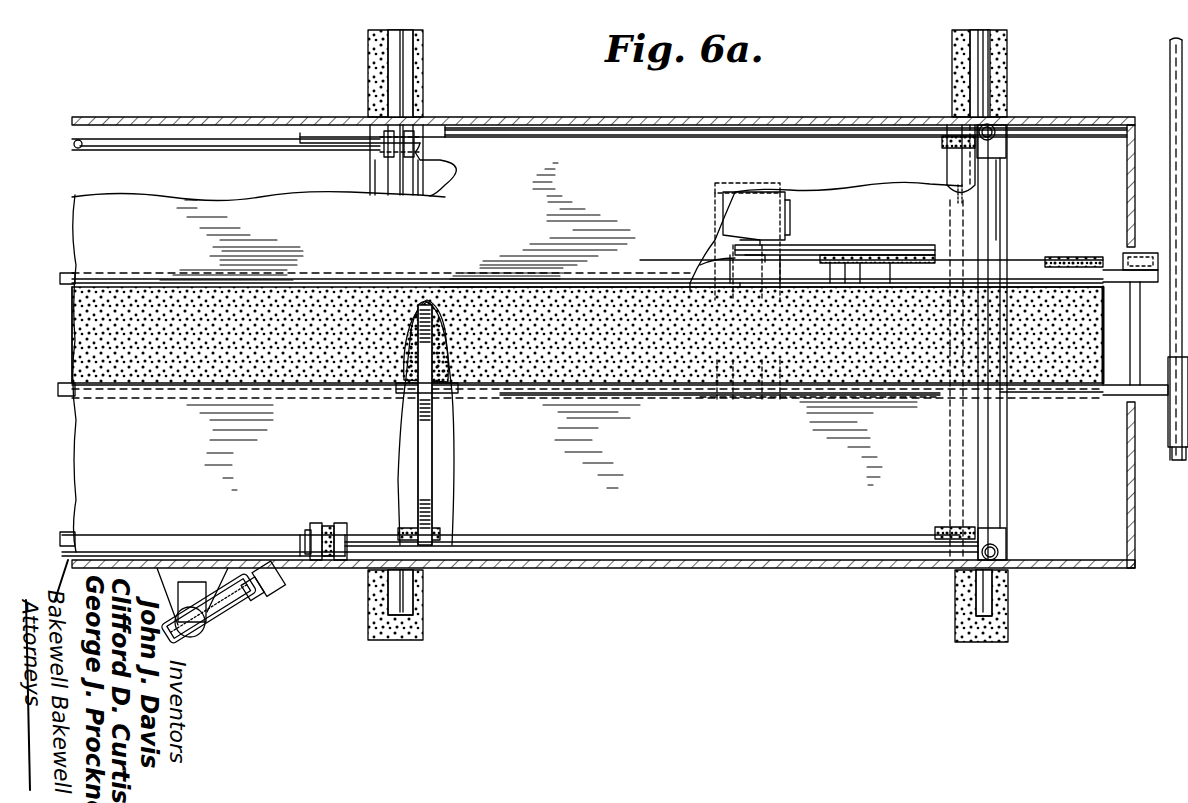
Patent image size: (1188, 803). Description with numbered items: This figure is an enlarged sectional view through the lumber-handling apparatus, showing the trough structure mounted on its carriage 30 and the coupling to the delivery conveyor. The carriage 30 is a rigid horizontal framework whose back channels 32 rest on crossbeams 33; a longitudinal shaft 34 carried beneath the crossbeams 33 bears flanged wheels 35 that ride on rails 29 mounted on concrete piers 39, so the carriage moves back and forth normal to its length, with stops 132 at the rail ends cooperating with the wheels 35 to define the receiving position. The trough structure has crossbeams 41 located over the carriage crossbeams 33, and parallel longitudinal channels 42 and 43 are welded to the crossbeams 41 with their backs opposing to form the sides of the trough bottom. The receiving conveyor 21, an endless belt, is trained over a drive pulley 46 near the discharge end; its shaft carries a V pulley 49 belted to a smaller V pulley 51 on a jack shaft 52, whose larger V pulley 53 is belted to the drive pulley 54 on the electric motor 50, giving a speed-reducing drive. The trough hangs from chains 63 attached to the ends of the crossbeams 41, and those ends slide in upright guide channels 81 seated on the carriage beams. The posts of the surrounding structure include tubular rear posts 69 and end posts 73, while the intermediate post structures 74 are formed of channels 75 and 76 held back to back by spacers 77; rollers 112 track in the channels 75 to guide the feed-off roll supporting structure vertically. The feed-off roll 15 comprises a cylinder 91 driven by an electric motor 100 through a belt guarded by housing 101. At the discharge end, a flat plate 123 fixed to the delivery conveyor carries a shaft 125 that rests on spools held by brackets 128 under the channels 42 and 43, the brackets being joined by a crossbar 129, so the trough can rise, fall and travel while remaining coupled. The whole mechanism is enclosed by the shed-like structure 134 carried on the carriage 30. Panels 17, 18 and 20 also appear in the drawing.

The feed-off roll 15 is at (235, 628).
The upper wall sheet 17 is at (508, 214).
The lower wall sheet 18 is at (526, 482).
The insulation panel 20 is at (358, 300).
The feed or receiving conveyor 21 is at (793, 380).
The rails 29 is at (401, 91).
The carriage 30 is at (544, 106).
The back channels 32 is at (838, 122).
The crossbeams 33 is at (388, 178).
The shaft 34 is at (226, 150).
The flanged wheels 35 is at (390, 136).
The concrete piers 39 is at (412, 68).
The crossbeams 41 is at (433, 444).
The longitudinal channel 42 is at (1038, 398).
The longitudinal channel 43 is at (694, 272).
The drive pulley 46 is at (1103, 288).
The V pulley 49 is at (1090, 258).
The electric motor 50 is at (786, 220).
The smaller V pulley 51 is at (865, 246).
The jack shaft 52 is at (880, 400).
The larger V pulley 53 is at (880, 255).
The drive pulley 54 is at (705, 258).
The chains 63 is at (948, 148).
The rear posts 69 is at (997, 132).
The end posts 73 is at (998, 550).
The intermediate post structures 74 is at (333, 590).
The channel 75 is at (314, 524).
The channel 76 is at (342, 524).
The spacers 77 is at (328, 527).
The upright guide channels 81 is at (1000, 66).
The cylinder 91 is at (212, 628).
The electric motor 100 is at (240, 612).
The housing 101 is at (265, 594).
The rollers 112 is at (306, 533).
The flat plate 123 is at (1172, 445).
The shaft 125 is at (1168, 86).
The bracket 128 is at (1143, 256).
The crossbar 129 is at (1132, 341).
The stops 132 is at (420, 618).
The shed-like structure 134 is at (257, 86).